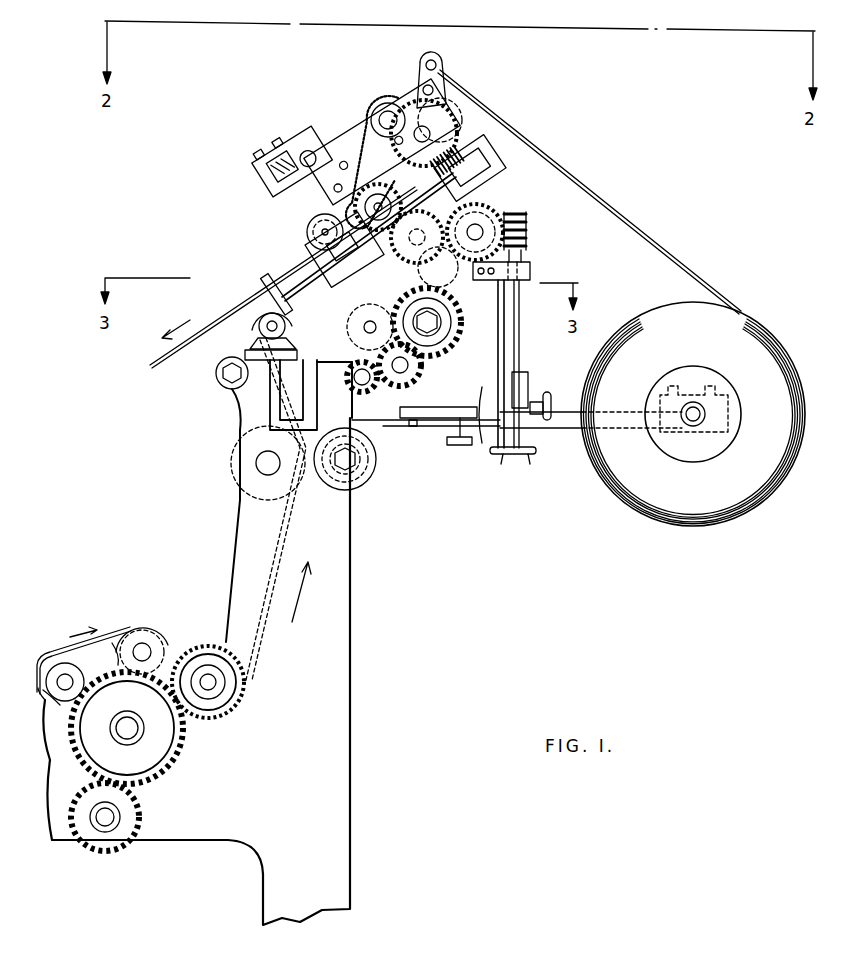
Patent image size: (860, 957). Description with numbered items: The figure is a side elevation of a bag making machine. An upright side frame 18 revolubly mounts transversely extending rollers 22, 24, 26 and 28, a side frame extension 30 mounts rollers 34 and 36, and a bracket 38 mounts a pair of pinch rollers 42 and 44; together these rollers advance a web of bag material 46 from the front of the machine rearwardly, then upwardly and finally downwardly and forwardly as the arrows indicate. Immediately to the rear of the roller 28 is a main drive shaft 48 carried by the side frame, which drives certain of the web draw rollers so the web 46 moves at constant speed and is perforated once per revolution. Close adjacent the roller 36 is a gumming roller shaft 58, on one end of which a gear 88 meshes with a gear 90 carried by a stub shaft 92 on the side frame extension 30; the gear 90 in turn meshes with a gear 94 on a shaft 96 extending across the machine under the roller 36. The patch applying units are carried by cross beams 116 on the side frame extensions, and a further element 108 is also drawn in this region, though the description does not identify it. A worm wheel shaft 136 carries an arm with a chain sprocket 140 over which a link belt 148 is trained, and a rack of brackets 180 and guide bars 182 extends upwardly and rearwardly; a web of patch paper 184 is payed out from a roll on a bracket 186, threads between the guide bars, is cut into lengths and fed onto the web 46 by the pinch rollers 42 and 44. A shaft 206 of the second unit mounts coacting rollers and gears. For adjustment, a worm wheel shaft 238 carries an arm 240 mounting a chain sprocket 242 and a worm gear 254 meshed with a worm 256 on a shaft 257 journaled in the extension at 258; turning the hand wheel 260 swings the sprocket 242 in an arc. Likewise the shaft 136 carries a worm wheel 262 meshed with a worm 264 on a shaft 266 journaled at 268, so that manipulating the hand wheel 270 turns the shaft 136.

The side frame 18 is at (352, 697).
The roller 22 is at (110, 739).
The roller 24 is at (145, 630).
The roller 26 is at (207, 644).
The roller 28 is at (238, 455).
The side frame extension 30 is at (440, 421).
The roller 34 is at (258, 328).
The roller 36 is at (360, 325).
The bracket 38 is at (290, 220).
The roller 42 is at (322, 236).
The roller 44 is at (316, 188).
The web of bag material 46 is at (288, 540).
The main drive shaft 48 is at (352, 463).
The gumming roller shaft 58 is at (438, 318).
The gear 88 is at (455, 336).
The gear 90 is at (423, 378).
The stub shaft 92 is at (400, 372).
The gear 94 is at (318, 386).
The shaft 96 is at (356, 372).
The knob 108 is at (549, 397).
The cross beam 116 is at (476, 178).
The worm wheel shaft 136 is at (420, 125).
The chain sprocket 140 is at (380, 108).
The link belt 148 is at (345, 172).
The bracket 180 is at (446, 77).
The guide bar 182 is at (427, 60).
The web of patch paper 184 is at (562, 166).
The bracket 186 is at (558, 418).
The shaft 206 is at (430, 274).
The worm wheel shaft 238 is at (482, 232).
The arm 240 is at (520, 262).
The chain sprocket 242 is at (508, 298).
The worm gear 254 is at (490, 212).
The worm 256 is at (528, 240).
The shaft 257 is at (519, 349).
The journal 258 is at (531, 274).
The hand wheel 260 is at (509, 456).
The worm wheel 262 is at (438, 113).
The worm 264 is at (395, 185).
The shaft 266 is at (305, 280).
The journal 268 is at (370, 145).
The hand wheel 270 is at (262, 285).